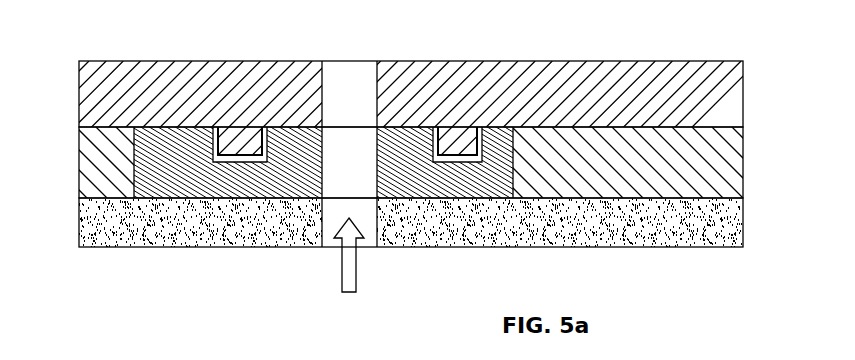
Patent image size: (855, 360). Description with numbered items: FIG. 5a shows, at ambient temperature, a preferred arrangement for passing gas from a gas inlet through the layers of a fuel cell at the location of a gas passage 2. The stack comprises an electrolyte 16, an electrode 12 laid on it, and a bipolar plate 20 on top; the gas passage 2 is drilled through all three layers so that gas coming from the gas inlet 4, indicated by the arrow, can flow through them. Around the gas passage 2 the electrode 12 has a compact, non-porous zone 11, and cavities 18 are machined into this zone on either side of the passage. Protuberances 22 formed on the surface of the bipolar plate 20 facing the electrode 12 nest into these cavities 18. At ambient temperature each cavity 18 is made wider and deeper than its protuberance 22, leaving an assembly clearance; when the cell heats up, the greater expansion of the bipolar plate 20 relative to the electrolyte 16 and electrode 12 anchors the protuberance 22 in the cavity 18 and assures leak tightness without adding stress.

The gas passage 2 is at (338, 75).
The gas inlet 4 is at (354, 257).
The non-porous zone 11 is at (222, 183).
The electrode 12 is at (718, 160).
The electrolyte 16 is at (88, 230).
The cavity 18 is at (466, 160).
The bipolar plate 20 is at (718, 93).
The protuberance 22 is at (455, 130).